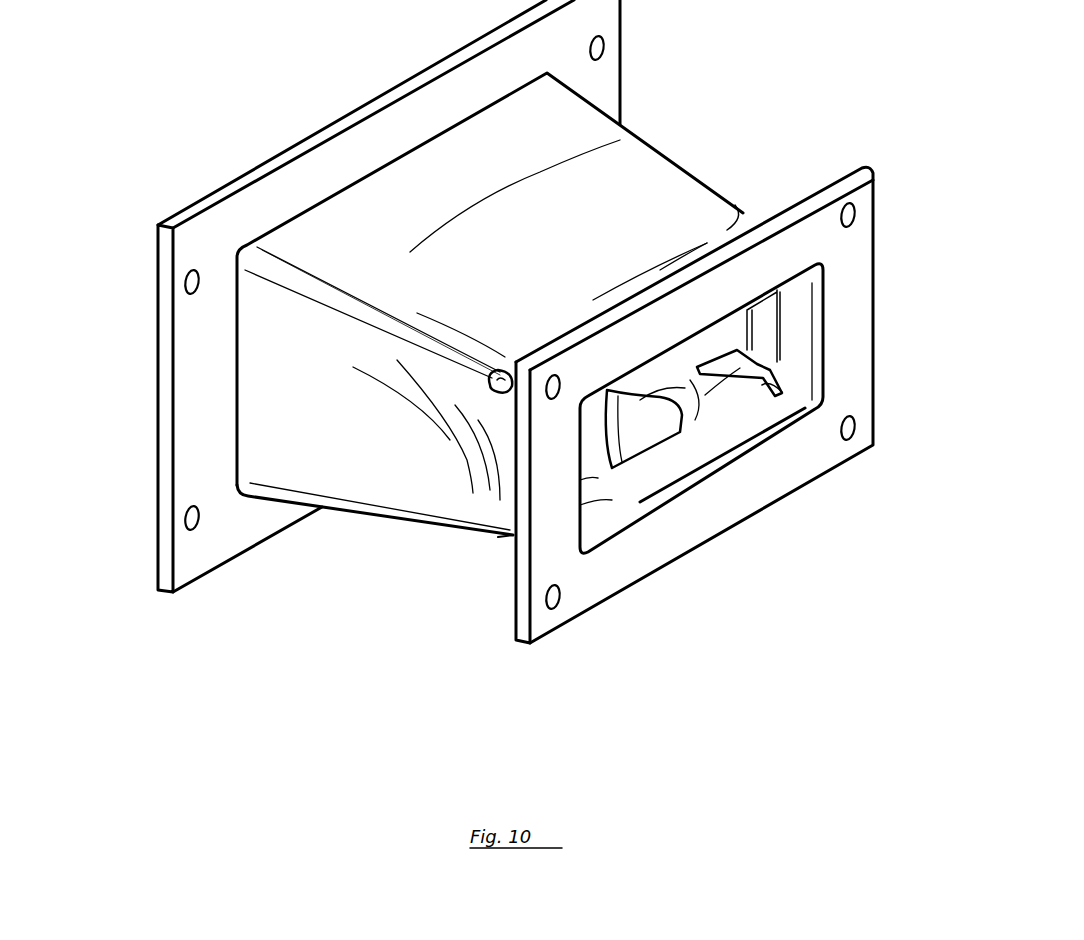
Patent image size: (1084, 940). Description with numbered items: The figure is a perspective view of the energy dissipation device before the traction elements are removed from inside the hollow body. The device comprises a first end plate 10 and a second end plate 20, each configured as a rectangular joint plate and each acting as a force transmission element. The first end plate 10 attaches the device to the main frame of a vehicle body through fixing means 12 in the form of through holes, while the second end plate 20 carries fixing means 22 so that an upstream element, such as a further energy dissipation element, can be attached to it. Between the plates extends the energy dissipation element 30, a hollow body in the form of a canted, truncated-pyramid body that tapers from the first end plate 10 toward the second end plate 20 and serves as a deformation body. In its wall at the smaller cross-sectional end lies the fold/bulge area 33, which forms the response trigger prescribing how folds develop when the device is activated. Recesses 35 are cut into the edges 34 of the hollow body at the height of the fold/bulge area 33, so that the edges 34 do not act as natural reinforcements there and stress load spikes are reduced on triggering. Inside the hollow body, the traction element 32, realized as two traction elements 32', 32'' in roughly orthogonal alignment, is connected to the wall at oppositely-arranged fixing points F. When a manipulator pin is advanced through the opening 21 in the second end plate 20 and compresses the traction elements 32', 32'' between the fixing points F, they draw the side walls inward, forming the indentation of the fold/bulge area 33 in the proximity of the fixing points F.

The first end plate 10 is at (367, 145).
The fixing means 12 is at (188, 282).
The second end plate 20 is at (586, 598).
The opening 21 is at (639, 514).
The fixing means 22 is at (851, 214).
The energy dissipation element 30 is at (560, 162).
The traction element 32 is at (714, 525).
The traction element 32' is at (760, 495).
The traction element 32'' is at (671, 545).
The fold/bulge area 33 is at (727, 230).
The edges 34 is at (660, 150).
The recesses 35 is at (495, 388).
The fixing points F is at (780, 337).